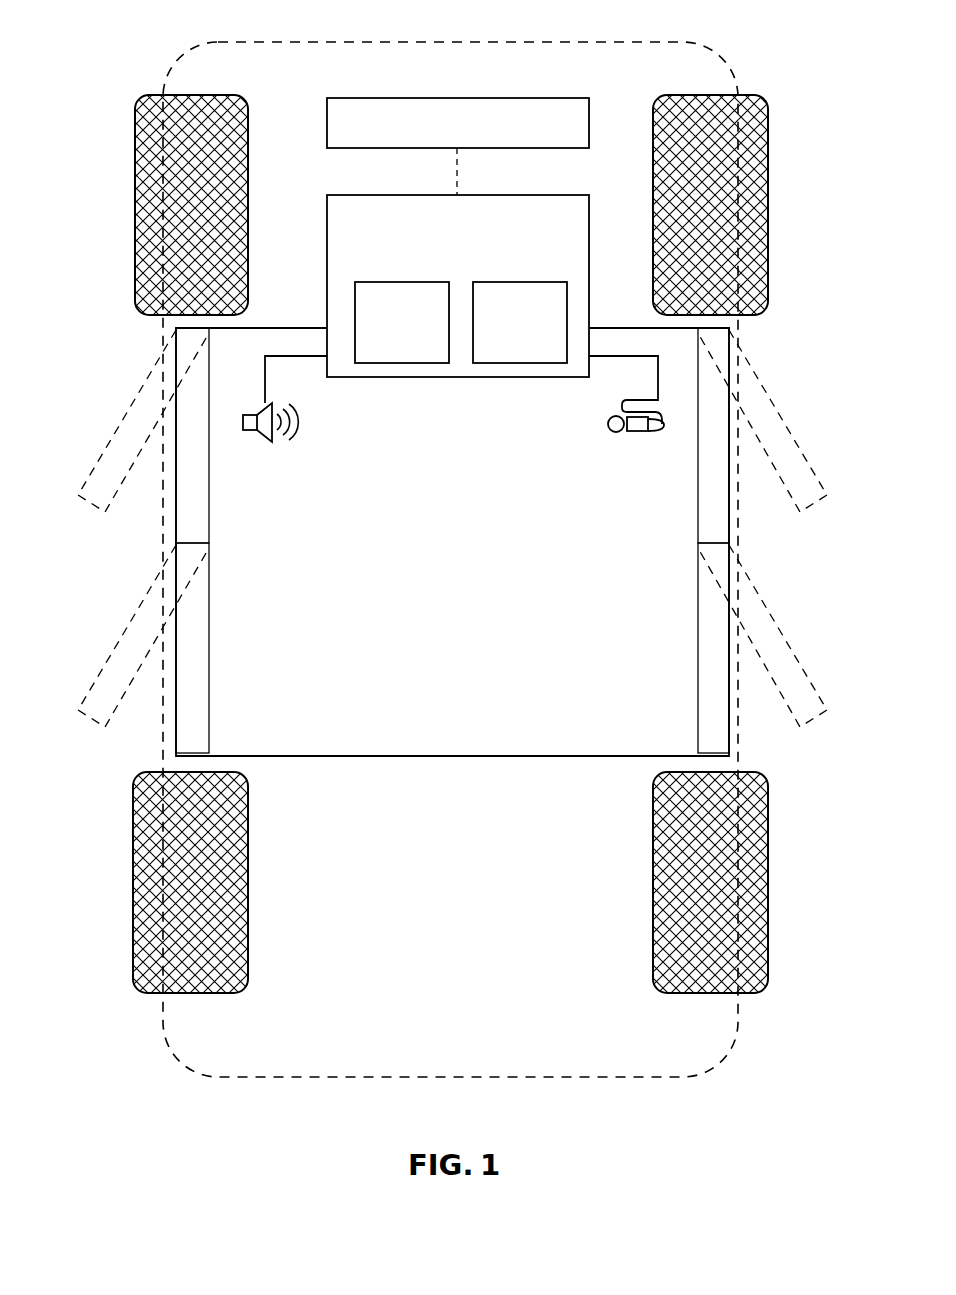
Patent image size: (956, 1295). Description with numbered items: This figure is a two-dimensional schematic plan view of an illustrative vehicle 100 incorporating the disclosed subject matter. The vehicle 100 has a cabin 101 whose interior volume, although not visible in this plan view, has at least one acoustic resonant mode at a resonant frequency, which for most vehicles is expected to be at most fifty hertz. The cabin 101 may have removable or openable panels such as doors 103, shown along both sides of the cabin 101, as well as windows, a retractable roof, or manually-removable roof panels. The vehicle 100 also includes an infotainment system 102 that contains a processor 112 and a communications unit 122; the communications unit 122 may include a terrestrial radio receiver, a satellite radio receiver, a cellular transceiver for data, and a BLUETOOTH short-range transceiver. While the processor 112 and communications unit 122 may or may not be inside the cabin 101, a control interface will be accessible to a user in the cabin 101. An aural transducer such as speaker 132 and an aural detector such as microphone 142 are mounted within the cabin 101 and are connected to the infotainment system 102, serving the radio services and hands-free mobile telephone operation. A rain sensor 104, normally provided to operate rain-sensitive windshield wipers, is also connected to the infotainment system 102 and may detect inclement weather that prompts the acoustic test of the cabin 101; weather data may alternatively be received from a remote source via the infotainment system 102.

The vehicle 100 is at (242, 42).
The cabin 101 is at (480, 758).
The infotainment system 102 is at (398, 195).
The doors 103 is at (190, 452).
The rain sensor 104 is at (398, 98).
The processor 112 is at (525, 348).
The communications unit 122 is at (403, 348).
The speaker 132 is at (250, 433).
The microphone 142 is at (638, 433).